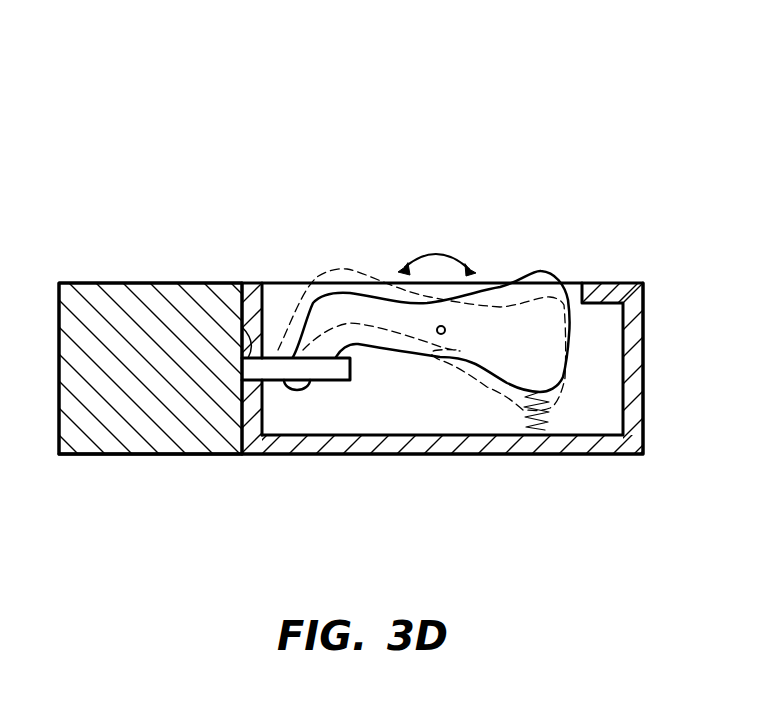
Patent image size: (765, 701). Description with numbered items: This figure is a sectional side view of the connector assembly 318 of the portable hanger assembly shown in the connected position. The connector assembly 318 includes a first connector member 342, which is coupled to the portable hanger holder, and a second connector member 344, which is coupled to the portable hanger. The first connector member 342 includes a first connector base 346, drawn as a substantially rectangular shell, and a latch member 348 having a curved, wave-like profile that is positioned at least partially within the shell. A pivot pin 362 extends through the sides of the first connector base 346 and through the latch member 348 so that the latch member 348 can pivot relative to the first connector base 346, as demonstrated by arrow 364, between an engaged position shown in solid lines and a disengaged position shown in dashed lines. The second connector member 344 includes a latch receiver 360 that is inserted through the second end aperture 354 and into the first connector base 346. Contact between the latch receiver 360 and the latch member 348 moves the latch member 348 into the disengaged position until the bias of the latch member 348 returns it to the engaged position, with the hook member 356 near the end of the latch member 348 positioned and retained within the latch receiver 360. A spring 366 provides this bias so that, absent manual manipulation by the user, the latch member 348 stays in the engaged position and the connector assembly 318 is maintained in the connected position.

The connector assembly 318 is at (571, 106).
The first connector member 342 is at (635, 405).
The second connector member 344 is at (121, 420).
The first connector base 346 is at (635, 327).
The latch member 348 is at (540, 277).
The second end aperture 354 is at (242, 317).
The hook member 356 is at (295, 390).
The latch receiver 360 is at (337, 372).
The pivot pin 362 is at (441, 334).
The arrow 364 is at (435, 252).
The spring 366 is at (547, 417).